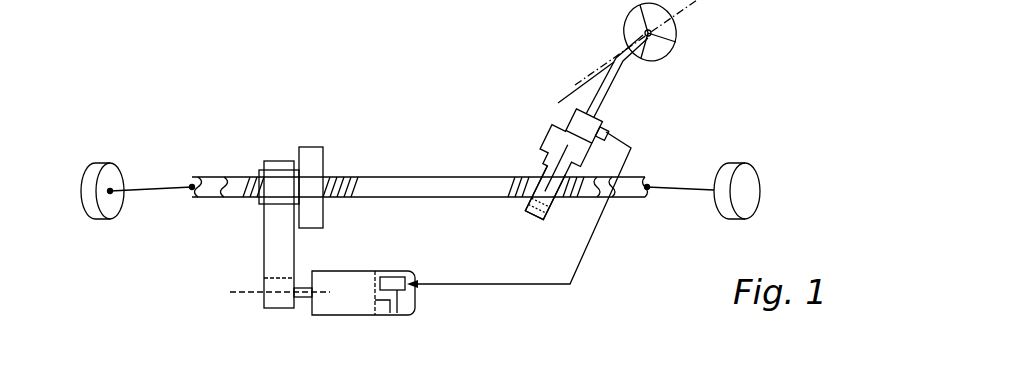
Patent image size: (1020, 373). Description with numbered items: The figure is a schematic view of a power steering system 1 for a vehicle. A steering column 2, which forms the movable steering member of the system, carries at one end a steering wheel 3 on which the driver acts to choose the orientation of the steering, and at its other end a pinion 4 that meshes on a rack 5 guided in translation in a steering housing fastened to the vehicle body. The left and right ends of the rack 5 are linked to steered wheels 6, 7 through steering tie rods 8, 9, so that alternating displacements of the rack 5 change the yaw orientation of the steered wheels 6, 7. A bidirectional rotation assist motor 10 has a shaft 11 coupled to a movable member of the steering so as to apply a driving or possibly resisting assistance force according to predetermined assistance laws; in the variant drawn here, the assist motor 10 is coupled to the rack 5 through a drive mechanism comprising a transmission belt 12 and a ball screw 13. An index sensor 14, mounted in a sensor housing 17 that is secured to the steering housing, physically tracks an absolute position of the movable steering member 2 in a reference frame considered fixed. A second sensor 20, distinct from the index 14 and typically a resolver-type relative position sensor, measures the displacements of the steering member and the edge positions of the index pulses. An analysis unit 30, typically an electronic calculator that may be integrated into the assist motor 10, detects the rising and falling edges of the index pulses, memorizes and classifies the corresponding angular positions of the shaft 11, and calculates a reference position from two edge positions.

The power steering system 1 is at (428, 87).
The steering column 2 is at (607, 90).
The steering wheel 3 is at (677, 33).
The pinion 4 is at (537, 222).
The rack 5 is at (427, 180).
The steered wheel 6 is at (757, 180).
The steered wheel 7 is at (112, 163).
The steering tie rod 8 is at (687, 185).
The steering tie rod 9 is at (157, 183).
The assist motor 10 is at (345, 282).
The shaft 11 is at (298, 300).
The transmission belt 12 is at (278, 243).
The ball screw 13 is at (310, 148).
The index sensor 14 is at (607, 133).
The sensor housing 17 is at (580, 125).
The second sensor 20 is at (387, 312).
The analysis unit 30 is at (392, 272).